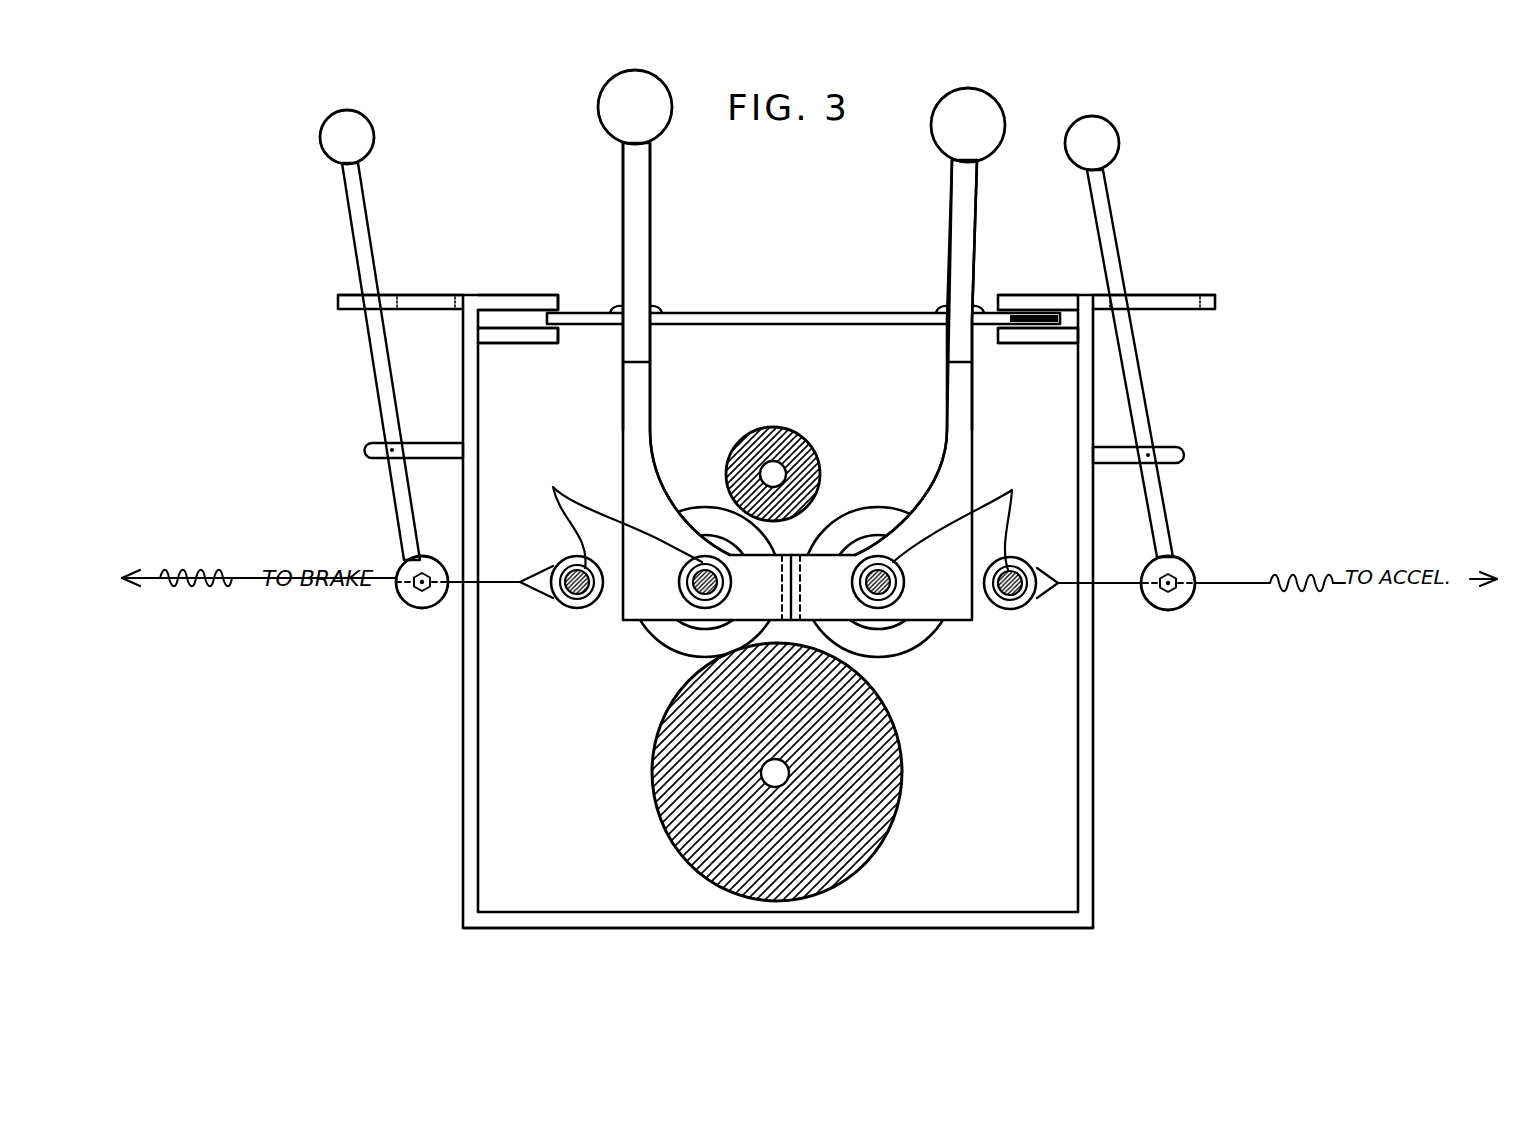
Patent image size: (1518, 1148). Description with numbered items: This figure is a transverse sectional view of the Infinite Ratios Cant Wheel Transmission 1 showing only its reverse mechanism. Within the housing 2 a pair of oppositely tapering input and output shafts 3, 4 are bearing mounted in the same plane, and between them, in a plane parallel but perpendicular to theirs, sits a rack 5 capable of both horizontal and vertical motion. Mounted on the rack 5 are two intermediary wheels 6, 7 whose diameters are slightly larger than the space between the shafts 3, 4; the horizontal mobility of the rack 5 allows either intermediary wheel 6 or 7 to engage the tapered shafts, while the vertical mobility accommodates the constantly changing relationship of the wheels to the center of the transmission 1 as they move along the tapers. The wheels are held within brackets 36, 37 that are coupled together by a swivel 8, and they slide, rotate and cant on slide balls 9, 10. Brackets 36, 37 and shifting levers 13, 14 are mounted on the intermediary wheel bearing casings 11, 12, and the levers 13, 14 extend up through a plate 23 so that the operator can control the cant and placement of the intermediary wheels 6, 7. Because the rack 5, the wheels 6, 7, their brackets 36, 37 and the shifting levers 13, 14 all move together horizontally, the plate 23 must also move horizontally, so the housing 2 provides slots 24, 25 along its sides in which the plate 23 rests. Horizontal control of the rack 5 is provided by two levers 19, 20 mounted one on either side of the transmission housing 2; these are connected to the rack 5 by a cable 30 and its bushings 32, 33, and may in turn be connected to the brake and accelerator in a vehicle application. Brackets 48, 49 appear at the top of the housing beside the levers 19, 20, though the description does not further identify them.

The Infinite Ratios Cant Wheel Transmission 1 is at (1100, 700).
The housing 2 is at (1082, 802).
The input shaft 3 is at (818, 466).
The output shaft 4 is at (888, 796).
The rack 5 is at (780, 514).
The intermediary wheel 6 is at (668, 635).
The intermediary wheel 7 is at (905, 648).
The swivel 8 is at (800, 592).
The slide ball 9 is at (725, 583).
The slide ball 10 is at (898, 581).
The intermediary wheel bearing casing 11 is at (717, 540).
The intermediary wheel bearing casing 12 is at (862, 545).
The shifting lever 13 is at (640, 192).
The shifting lever 14 is at (965, 220).
The lever 19 is at (362, 195).
The lever 20 is at (1100, 198).
The plate 23 is at (765, 315).
The slot 24 is at (510, 322).
The slot 25 is at (1072, 323).
The cable 30 is at (1100, 583).
The bushing 32 is at (1020, 605).
The bushing 33 is at (566, 603).
The bracket 36 is at (963, 450).
The bracket 37 is at (648, 415).
The left mounting bracket 48 is at (398, 296).
The right mounting bracket 49 is at (1170, 296).